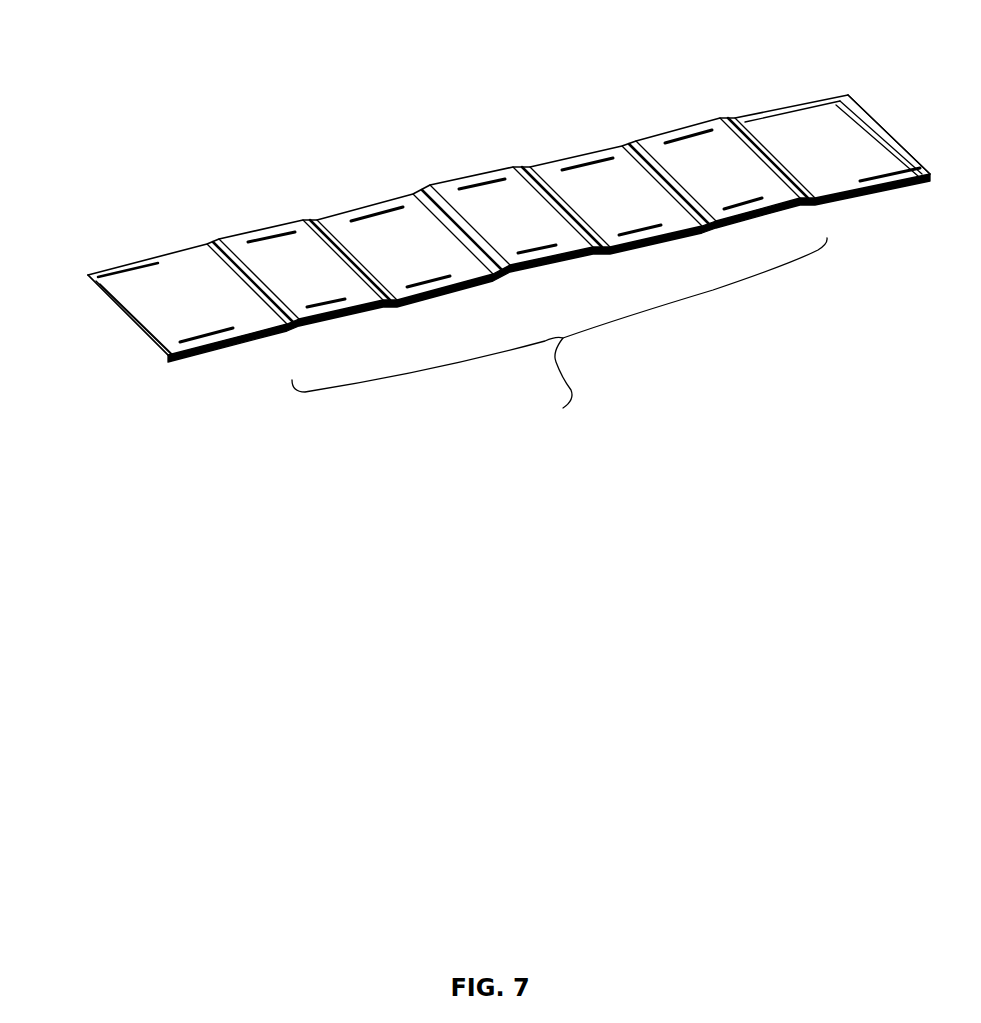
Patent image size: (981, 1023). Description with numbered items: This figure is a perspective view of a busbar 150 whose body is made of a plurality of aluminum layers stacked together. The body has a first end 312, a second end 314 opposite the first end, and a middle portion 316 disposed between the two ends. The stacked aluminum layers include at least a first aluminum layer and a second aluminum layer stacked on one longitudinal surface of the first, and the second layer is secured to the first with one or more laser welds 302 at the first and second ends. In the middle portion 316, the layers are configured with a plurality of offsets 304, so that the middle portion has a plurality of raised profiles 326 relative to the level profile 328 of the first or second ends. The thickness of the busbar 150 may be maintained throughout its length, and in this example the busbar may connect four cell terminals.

The busbar 150 is at (342, 160).
The laser weld 302 is at (90, 281).
The offset 304 is at (232, 236).
The first end 312 is at (118, 326).
The second end 314 is at (904, 113).
The middle portion 316 is at (559, 342).
The raised profile 326 is at (282, 305).
The level profile 328 is at (187, 270).